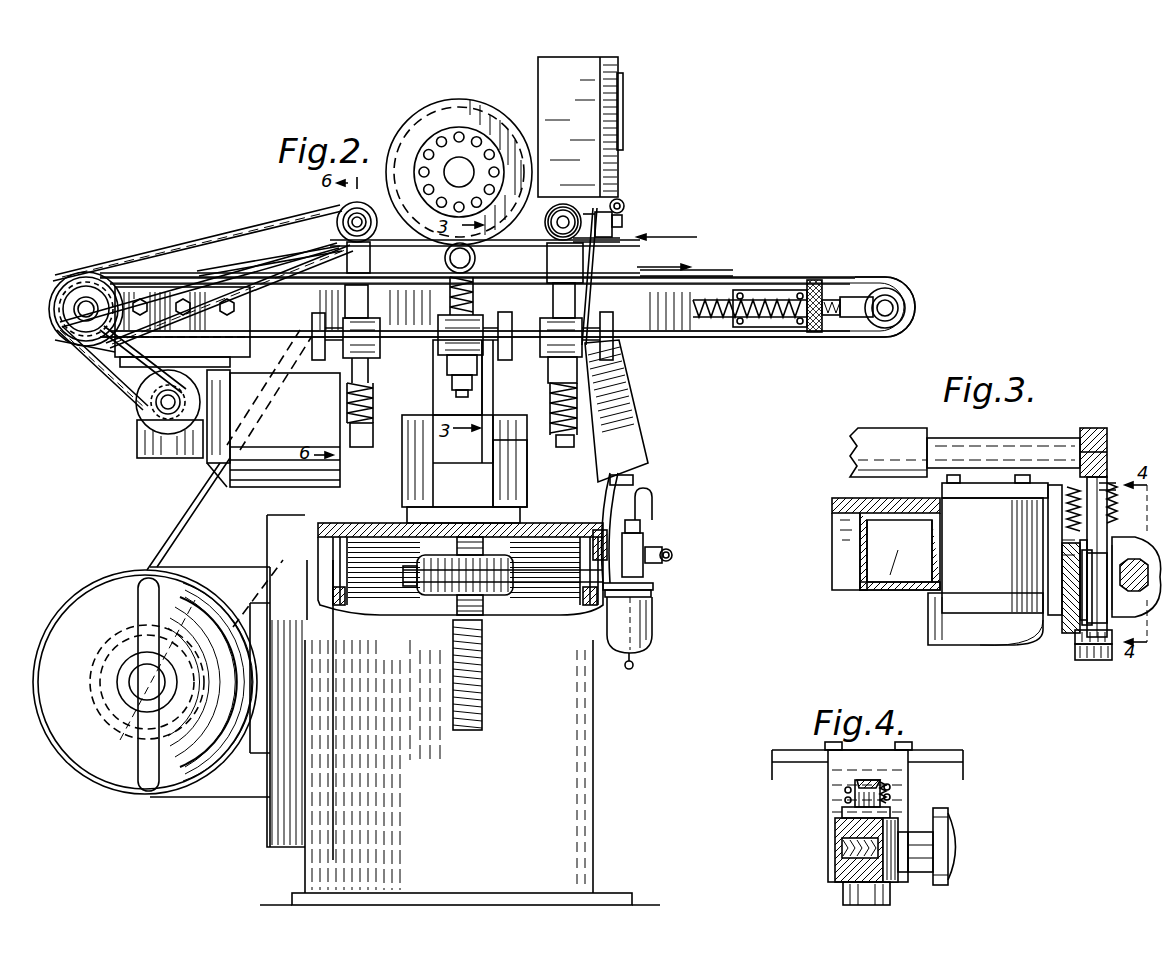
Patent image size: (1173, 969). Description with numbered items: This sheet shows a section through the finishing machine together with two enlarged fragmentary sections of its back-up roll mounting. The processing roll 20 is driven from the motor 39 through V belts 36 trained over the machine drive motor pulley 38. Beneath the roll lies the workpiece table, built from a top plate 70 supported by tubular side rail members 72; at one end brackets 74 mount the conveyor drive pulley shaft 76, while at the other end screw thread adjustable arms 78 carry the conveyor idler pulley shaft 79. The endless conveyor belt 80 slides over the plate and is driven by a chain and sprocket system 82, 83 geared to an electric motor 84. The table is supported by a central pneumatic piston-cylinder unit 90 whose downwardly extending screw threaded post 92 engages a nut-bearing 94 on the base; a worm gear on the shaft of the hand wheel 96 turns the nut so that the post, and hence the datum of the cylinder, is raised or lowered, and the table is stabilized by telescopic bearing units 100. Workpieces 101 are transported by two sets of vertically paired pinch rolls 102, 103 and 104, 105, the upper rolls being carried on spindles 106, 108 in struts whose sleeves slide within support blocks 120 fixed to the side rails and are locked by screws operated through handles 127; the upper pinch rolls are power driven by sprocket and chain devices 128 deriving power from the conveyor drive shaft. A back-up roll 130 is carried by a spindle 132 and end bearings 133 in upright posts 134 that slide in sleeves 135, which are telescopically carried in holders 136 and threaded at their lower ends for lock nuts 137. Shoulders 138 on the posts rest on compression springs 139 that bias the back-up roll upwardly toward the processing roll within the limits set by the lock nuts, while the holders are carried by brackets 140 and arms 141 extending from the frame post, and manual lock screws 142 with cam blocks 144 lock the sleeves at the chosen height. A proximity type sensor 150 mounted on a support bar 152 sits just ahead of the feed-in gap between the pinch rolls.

In FIG. 2, the processing roll 20 is at (418, 118).
In FIG. 2, the V belts 36 is at (188, 522).
In FIG. 2, the machine drive motor pulley 38 is at (117, 655).
In FIG. 2, the motor 39 is at (97, 586).
In FIG. 2, the top plate 70 is at (783, 279).
In FIG. 3, the top plate 70 is at (843, 499).
In FIG. 2, the tubular side rail members 72 is at (694, 328).
In FIG. 3, the tubular side rail members 72 is at (896, 581).
In FIG. 2, the brackets 74 is at (113, 348).
In FIG. 2, the conveyor drive pulley shaft 76 is at (74, 311).
In FIG. 2, the screw thread adjustable arms 78 is at (853, 320).
In FIG. 2, the conveyor idler pulley shaft 79 is at (891, 320).
In FIG. 2, the conveyor belt 80 is at (848, 277).
In FIG. 2, the chain and sprocket system 82 is at (113, 383).
In FIG. 2, the chain and sprocket system 83 is at (160, 404).
In FIG. 2, the electric motor 84 is at (155, 426).
In FIG. 2, the pneumatic piston-cylinder unit 90 is at (533, 472).
In FIG. 2, the screw threaded post 92 is at (481, 662).
In FIG. 2, the nut-bearing 94 is at (418, 596).
In FIG. 2, the hand wheel 96 is at (650, 492).
In FIG. 2, the telescopic bearing units 100 is at (437, 396).
In FIG. 3, the telescopic bearing units 100 is at (935, 620).
In FIG. 2, the workpiece 101 is at (238, 268).
In FIG. 2, the upper pinch roll 102 is at (572, 200).
In FIG. 2, the lower pinch roll 103 is at (584, 252).
In FIG. 2, the upper pinch roll 104 is at (343, 208).
In FIG. 2, the lower pinch roll 105 is at (326, 246).
In FIG. 2, the spindle 106 is at (337, 226).
In FIG. 2, the spindle 108 is at (621, 200).
In FIG. 2, the support blocks 120 is at (352, 370).
In FIG. 2, the handles 127 is at (316, 360).
In FIG. 2, the sprocket and chain devices 128 is at (166, 259).
In FIG. 2, the back-up roll 130 is at (476, 259).
In FIG. 3, the back-up roll 130 is at (895, 432).
In FIG. 3, the spindle 132 is at (1052, 440).
In FIG. 3, the end bearings 133 is at (1104, 439).
In FIG. 3, the upright posts 134 is at (1107, 481).
In FIG. 3, the sleeves 135 is at (1087, 580).
In FIG. 4, the sleeves 135 is at (857, 786).
In FIG. 3, the holders 136 is at (1072, 622).
In FIG. 4, the holders 136 is at (845, 806).
In FIG. 3, the lock nuts 137 is at (1110, 658).
In FIG. 4, the lock nuts 137 is at (843, 900).
In FIG. 3, the shoulders 138 is at (1111, 491).
In FIG. 3, the compression springs 139 is at (1112, 521).
In FIG. 4, the compression springs 139 is at (889, 788).
In FIG. 3, the brackets 140 is at (1080, 561).
In FIG. 4, the brackets 140 is at (897, 879).
In FIG. 3, the arms 141 is at (1055, 503).
In FIG. 4, the arms 141 is at (903, 772).
In FIG. 3, the manual lock screws 142 is at (1131, 614).
In FIG. 4, the manual lock screws 142 is at (947, 828).
In FIG. 3, the cam blocks 144 is at (1095, 573).
In FIG. 4, the cam blocks 144 is at (838, 856).
In FIG. 2, the proximity type sensor 150 is at (620, 220).
In FIG. 2, the support bar 152 is at (586, 264).